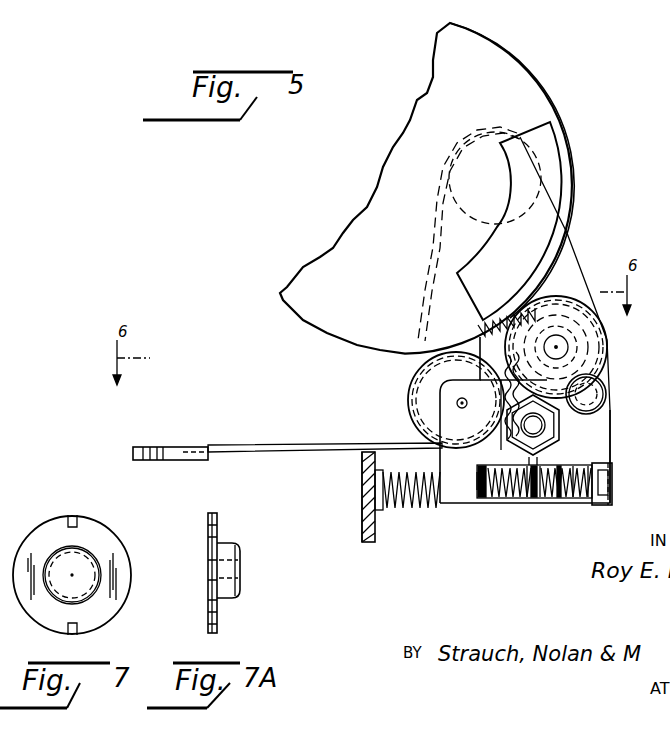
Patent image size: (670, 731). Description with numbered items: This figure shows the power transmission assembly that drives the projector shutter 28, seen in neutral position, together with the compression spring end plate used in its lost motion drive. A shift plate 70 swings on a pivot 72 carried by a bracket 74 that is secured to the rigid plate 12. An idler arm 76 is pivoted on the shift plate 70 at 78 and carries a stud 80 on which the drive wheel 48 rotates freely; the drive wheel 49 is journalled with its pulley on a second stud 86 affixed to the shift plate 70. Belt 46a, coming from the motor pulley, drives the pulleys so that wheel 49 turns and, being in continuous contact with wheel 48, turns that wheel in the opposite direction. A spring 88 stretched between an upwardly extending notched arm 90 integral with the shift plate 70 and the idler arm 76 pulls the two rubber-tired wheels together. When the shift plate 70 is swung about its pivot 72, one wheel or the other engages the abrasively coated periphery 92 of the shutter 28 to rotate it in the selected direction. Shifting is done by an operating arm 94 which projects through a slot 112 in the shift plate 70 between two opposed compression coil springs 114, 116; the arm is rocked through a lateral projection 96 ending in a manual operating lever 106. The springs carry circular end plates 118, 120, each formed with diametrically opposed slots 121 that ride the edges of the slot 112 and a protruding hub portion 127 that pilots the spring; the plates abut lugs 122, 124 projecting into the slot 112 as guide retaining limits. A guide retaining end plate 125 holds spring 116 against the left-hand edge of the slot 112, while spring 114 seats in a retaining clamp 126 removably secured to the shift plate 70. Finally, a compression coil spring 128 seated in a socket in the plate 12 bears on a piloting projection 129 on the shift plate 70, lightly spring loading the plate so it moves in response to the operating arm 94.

In FIG. 5, the shutter 28 is at (519, 59).
In FIG. 5, the abrasive coating 92 is at (569, 146).
In FIG. 5, the belt 46a is at (567, 238).
In FIG. 5, the spring 88 is at (513, 304).
In FIG. 5, the stud 80 is at (571, 324).
In FIG. 5, the drive wheel 48 is at (605, 345).
In FIG. 5, the idler arm 76 is at (586, 363).
In FIG. 5, the pivot 78 is at (584, 393).
In FIG. 5, the pivot 72 is at (537, 425).
In FIG. 5, the shift plate 70 is at (607, 417).
In FIG. 5, the notched arm 90 is at (482, 367).
In FIG. 5, the stud 86 is at (468, 402).
In FIG. 5, the drive wheel 49 is at (427, 413).
In FIG. 5, the manual operating lever 106 is at (148, 447).
In FIG. 5, the lateral projection 96 is at (253, 443).
In FIG. 5, the lug 122 is at (540, 462).
In FIG. 5, the slot 112 is at (573, 467).
In FIG. 5, the retaining clamp 126 is at (613, 476).
In FIG. 5, the guide retaining end plate 125 is at (474, 472).
In FIG. 5, the piloting projection 129 is at (420, 503).
In FIG. 5, the compression coil spring 128 is at (372, 528).
In FIG. 5, the plate 12 is at (363, 540).
In FIG. 5, the compression coil spring 116 is at (485, 500).
In FIG. 5, the bracket 74 is at (515, 458).
In FIG. 5, the end plate 120 is at (527, 495).
In FIG. 5, the operating arm 94 is at (534, 497).
In FIG. 5, the lug 124 is at (538, 500).
In FIG. 5, the end plate 118 is at (559, 497).
In FIG. 7, the end plate 118 is at (119, 537).
In FIG. 7A, the end plate 118 is at (210, 517).
In FIG. 5, the compression coil spring 114 is at (588, 497).
In FIG. 7, the slots 121 is at (73, 520).
In FIG. 7A, the hub portion 127 is at (225, 545).